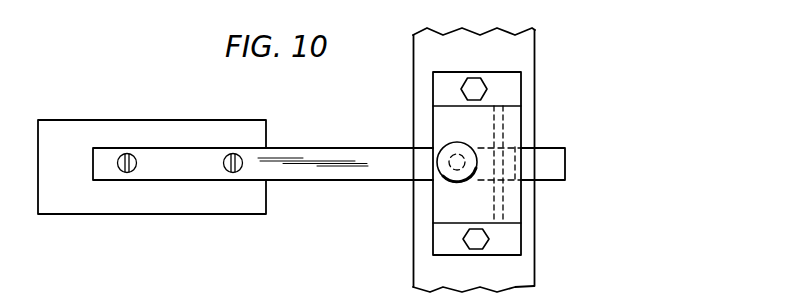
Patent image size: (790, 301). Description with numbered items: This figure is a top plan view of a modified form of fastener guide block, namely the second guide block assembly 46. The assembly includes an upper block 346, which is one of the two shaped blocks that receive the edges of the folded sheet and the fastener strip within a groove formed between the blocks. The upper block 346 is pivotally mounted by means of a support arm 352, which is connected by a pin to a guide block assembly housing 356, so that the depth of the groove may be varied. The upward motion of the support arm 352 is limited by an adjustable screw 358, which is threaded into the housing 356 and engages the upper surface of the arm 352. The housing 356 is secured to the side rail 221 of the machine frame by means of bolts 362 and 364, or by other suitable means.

The second guide block assembly 46 is at (540, 120).
The side rail 221 is at (535, 256).
The upper block 346 is at (76, 132).
The support arm 352 is at (337, 155).
The guide block assembly housing 356 is at (485, 200).
The adjustable screw 358 is at (459, 151).
The bolt 362 is at (474, 77).
The bolt 364 is at (476, 232).